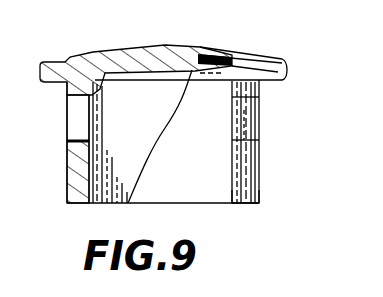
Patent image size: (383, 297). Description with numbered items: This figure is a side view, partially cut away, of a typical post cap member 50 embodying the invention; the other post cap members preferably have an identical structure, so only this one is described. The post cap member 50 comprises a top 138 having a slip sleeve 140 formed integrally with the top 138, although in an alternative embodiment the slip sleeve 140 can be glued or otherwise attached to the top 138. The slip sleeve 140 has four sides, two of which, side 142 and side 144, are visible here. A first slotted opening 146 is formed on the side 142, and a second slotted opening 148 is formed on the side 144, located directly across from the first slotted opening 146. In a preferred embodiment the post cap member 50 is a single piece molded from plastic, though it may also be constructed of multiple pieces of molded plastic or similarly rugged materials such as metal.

The post cap member 50 is at (293, 32).
The top 138 is at (285, 71).
The slip sleeve 140 is at (258, 169).
The side 142 is at (70, 188).
The side 144 is at (259, 198).
The first slotted opening 146 is at (67, 133).
The second slotted opening 148 is at (250, 126).